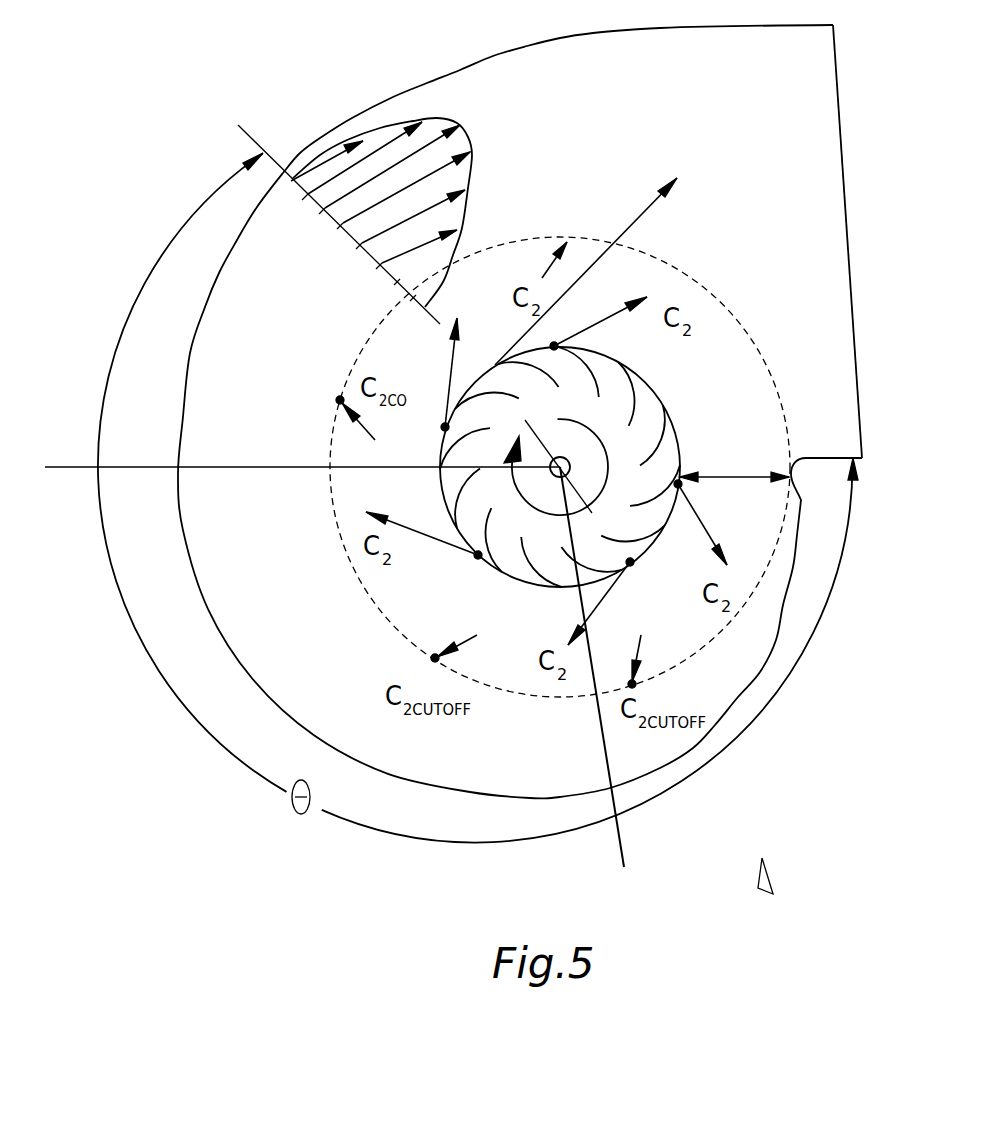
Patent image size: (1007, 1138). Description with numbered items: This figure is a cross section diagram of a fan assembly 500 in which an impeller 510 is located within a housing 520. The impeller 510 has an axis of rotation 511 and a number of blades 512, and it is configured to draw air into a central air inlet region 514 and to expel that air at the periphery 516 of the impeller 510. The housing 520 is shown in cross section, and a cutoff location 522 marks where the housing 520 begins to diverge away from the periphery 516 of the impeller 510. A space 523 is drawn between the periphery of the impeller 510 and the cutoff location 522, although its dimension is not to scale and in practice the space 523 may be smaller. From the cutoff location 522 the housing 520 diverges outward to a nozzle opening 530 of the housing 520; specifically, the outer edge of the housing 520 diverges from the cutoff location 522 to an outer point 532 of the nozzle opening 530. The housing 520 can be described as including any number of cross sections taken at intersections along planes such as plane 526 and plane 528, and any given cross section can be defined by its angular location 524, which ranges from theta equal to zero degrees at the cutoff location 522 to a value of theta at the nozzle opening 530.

The fan assembly 500 is at (773, 893).
The impeller 510 is at (615, 385).
The axis of rotation 511 is at (560, 467).
The blades 512 is at (582, 365).
The central air inlet region 514 is at (537, 405).
The periphery 516 is at (680, 440).
The housing 520 is at (738, 699).
The cutoff location 522 is at (787, 422).
The space 523 is at (732, 478).
The angular location 524 is at (235, 755).
The plane 526 is at (624, 855).
The plane 528 is at (65, 467).
The nozzle opening 530 is at (845, 150).
The outer point 532 is at (833, 25).